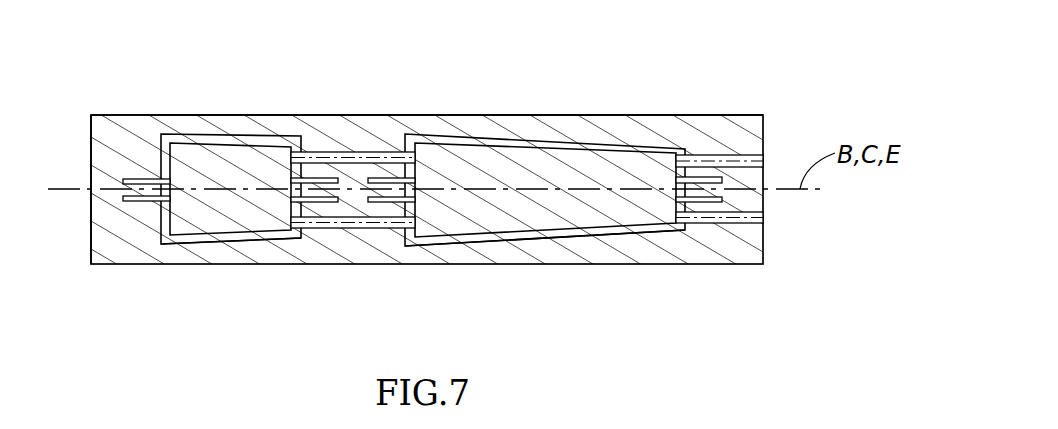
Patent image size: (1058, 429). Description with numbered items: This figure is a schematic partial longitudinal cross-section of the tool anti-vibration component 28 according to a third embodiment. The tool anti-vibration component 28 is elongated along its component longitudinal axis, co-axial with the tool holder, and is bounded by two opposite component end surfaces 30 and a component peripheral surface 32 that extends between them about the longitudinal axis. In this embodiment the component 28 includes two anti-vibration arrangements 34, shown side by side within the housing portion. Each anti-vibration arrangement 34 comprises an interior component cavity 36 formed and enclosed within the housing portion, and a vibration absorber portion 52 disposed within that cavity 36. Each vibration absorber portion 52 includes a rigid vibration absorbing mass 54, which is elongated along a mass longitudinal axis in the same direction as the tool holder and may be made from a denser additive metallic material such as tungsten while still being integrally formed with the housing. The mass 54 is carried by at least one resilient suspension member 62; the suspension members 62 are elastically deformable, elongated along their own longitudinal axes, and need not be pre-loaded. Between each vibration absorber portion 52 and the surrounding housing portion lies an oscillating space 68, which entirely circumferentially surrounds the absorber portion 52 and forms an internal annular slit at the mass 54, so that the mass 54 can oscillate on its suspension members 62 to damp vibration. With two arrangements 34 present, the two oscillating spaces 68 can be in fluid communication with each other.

The tool anti-vibration component 28 is at (748, 87).
The component end surface 30 is at (90, 152).
The component peripheral surface 32 is at (529, 115).
The anti-vibration arrangement 34 is at (235, 123).
The interior component cavity 36 is at (208, 137).
The vibration absorber portion 52 is at (193, 163).
The vibration absorbing mass 54 is at (267, 172).
The resilient suspension member 62 is at (140, 194).
The oscillating space 68 is at (228, 238).